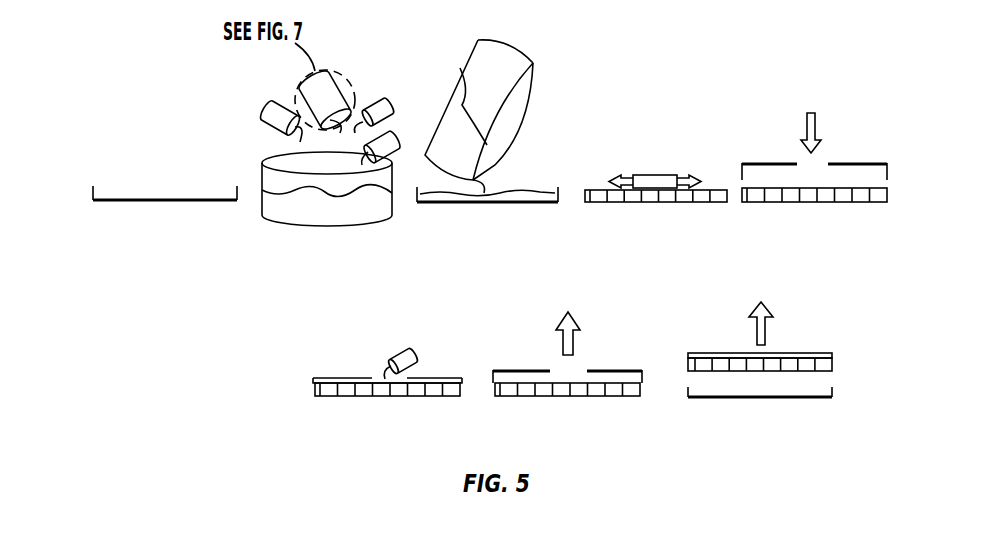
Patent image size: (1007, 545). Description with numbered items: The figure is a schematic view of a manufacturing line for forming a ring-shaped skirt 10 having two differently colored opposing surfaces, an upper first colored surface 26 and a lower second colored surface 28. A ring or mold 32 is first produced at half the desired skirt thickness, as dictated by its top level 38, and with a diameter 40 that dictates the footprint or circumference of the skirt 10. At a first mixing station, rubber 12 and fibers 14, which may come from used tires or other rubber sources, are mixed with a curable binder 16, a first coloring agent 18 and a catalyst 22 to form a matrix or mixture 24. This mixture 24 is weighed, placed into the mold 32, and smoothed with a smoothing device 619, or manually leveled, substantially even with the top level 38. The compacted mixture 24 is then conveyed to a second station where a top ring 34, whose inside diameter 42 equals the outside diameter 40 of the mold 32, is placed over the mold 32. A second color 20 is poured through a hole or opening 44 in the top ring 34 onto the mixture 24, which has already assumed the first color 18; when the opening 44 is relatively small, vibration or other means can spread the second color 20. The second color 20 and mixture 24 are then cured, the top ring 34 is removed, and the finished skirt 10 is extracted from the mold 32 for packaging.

The skirt 10 is at (572, 372).
The rubber 12 is at (320, 117).
The fibers 14 is at (352, 103).
The curable binder 16 is at (290, 133).
The coloring agent 18 is at (367, 117).
The second color 20 is at (390, 353).
The catalyst 22 is at (374, 147).
The mixture 24 is at (338, 221).
The first colored surface 26 is at (697, 355).
The second colored surface 28 is at (702, 372).
The mold 32 is at (114, 172).
The top ring 34 is at (872, 163).
The top level 38 is at (80, 188).
The diameter 40 is at (237, 217).
The inside diameter 42 is at (887, 175).
The opening 44 is at (372, 377).
The smoothing device 619 is at (660, 175).